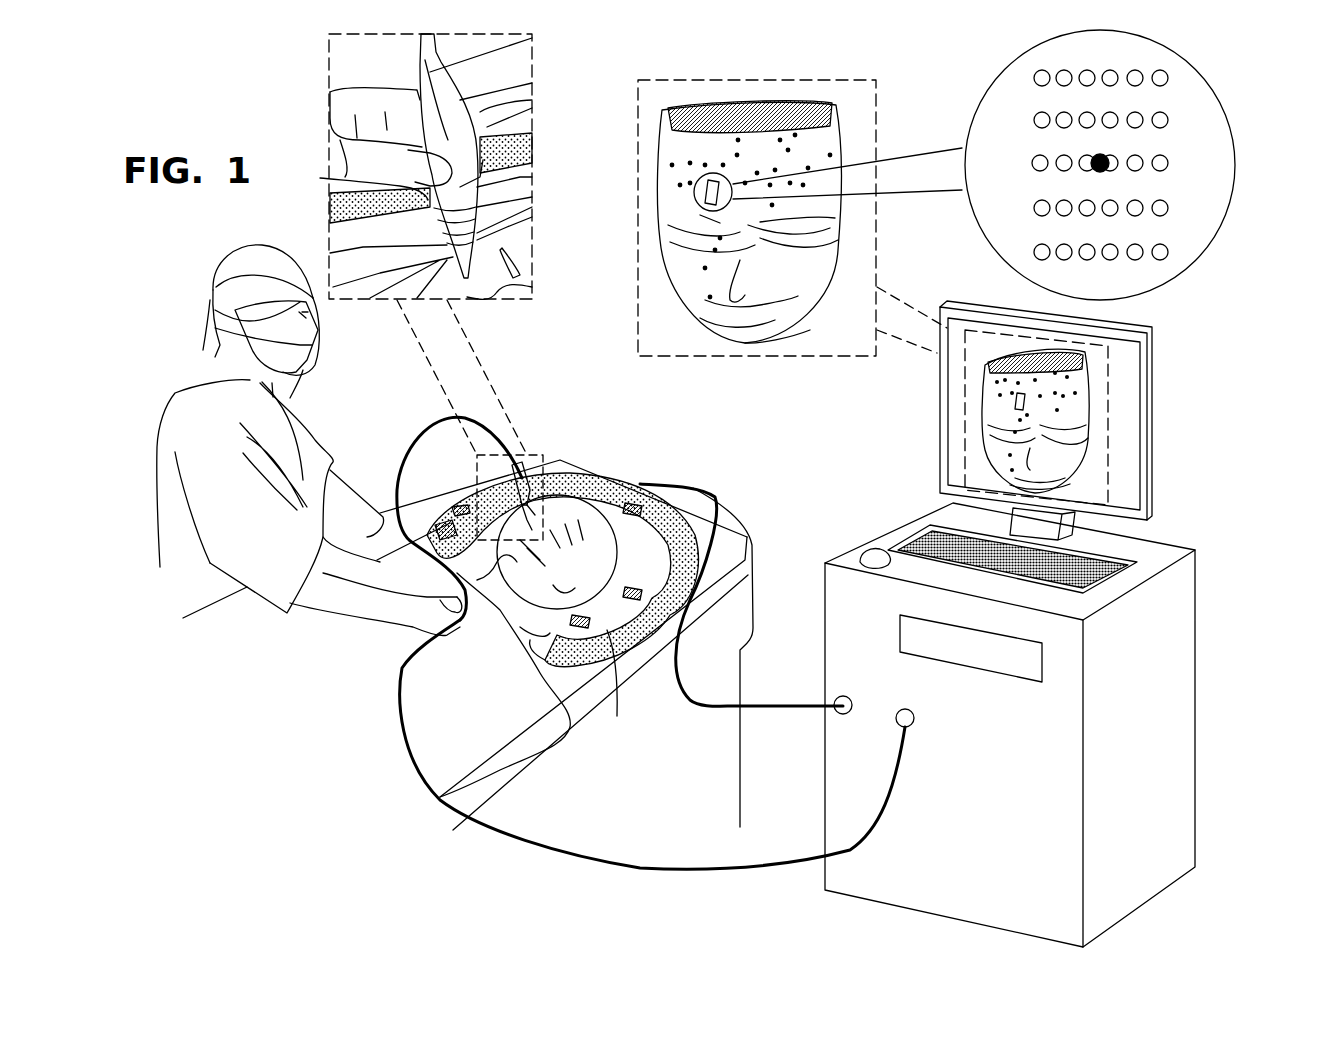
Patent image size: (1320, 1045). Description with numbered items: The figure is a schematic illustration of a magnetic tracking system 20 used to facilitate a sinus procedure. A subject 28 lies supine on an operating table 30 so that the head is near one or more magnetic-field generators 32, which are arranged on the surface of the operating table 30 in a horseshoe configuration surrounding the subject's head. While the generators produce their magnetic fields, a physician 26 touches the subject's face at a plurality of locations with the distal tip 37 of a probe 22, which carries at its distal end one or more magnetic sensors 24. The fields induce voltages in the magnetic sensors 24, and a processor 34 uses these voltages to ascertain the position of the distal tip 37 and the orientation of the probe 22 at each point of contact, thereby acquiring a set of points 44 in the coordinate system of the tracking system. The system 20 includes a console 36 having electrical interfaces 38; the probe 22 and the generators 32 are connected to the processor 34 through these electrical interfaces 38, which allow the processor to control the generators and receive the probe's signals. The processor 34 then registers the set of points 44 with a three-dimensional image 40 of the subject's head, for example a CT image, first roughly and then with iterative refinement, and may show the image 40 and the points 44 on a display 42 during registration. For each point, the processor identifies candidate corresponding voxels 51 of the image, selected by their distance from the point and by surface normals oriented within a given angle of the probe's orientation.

The magnetic tracking system 20 is at (262, 100).
The probe 22 is at (437, 83).
The magnetic sensors 24 is at (478, 180).
The physician 26 is at (218, 266).
The subject 28 is at (583, 520).
The operating table 30 is at (748, 536).
The magnetic-field generators 32 is at (617, 716).
The processor 34 is at (1016, 677).
The console 36 is at (1195, 690).
The distal tip 37 is at (495, 285).
The electrical interfaces 38 is at (846, 716).
The three-dimensional image 40 is at (655, 212).
The display 42 is at (940, 448).
The set of points 44 is at (687, 163).
The candidate corresponding voxels 51 is at (1167, 121).